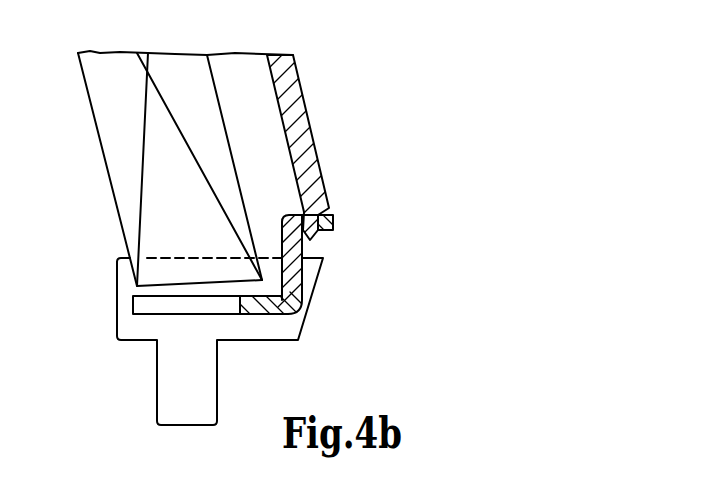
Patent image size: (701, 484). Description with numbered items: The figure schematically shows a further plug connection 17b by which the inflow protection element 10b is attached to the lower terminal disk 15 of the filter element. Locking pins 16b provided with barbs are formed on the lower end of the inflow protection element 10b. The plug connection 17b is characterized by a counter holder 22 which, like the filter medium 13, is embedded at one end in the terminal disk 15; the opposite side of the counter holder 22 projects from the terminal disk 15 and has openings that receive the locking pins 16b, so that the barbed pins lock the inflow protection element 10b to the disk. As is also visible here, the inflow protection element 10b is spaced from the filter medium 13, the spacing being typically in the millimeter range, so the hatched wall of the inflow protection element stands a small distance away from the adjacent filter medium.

The filter medium 13 is at (123, 177).
The inflow protection element 10b is at (303, 122).
The locking pins 16b is at (318, 233).
The further plug connection 17b is at (362, 225).
The counter holder 22 is at (292, 302).
The lower terminal disk 15 is at (173, 379).